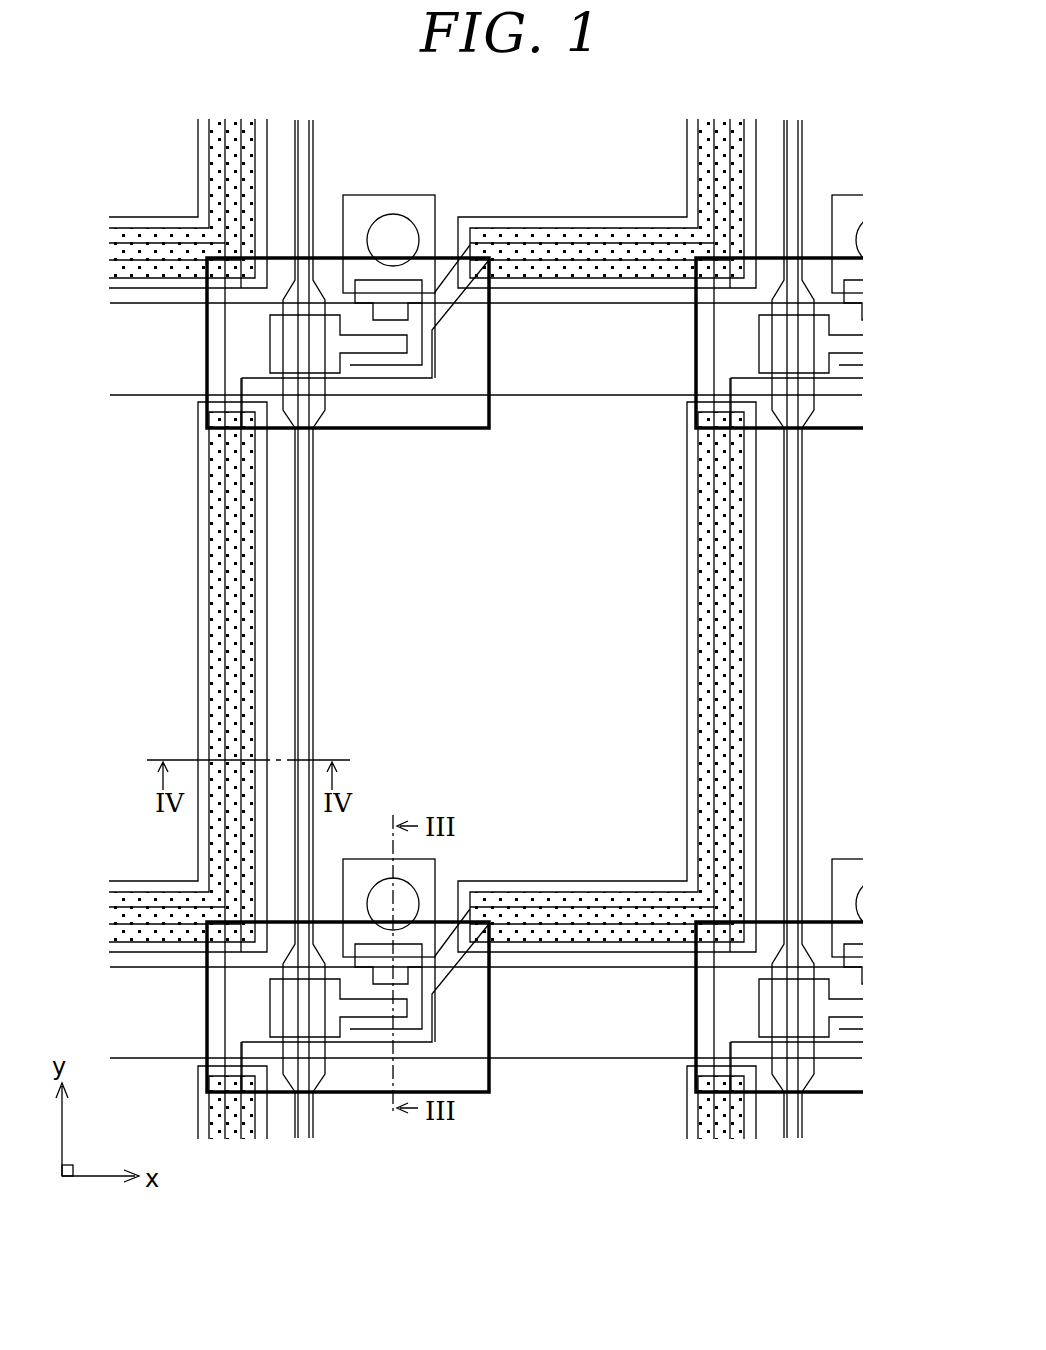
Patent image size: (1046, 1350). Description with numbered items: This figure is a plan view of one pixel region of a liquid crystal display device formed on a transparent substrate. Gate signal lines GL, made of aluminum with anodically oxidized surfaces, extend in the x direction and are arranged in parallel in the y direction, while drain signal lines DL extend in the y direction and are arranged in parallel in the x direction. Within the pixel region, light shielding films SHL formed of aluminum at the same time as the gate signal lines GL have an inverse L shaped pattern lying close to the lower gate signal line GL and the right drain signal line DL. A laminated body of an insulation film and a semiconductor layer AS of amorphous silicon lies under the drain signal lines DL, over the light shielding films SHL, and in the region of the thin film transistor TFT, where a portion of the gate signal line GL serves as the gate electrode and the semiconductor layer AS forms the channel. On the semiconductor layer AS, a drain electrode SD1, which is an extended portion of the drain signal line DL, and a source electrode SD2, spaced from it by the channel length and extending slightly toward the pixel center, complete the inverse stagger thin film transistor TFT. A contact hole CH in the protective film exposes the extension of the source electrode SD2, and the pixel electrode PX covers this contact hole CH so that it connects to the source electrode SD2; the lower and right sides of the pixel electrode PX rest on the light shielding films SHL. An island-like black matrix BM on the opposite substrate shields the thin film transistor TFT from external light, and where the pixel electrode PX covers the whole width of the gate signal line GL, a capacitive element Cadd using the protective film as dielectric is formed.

The gate signal line GL is at (98, 313).
The drain signal line DL is at (317, 1143).
The semiconductor layer AS is at (273, 487).
The light shielding film SHL is at (527, 286).
The pixel electrode PX is at (637, 257).
The black matrix BM is at (441, 247).
The contact hole CH is at (370, 903).
The thin film transistor TFT is at (590, 729).
The drain electrode SD1 is at (375, 1007).
The source electrode SD2 is at (400, 973).
The capacitive element Cadd is at (571, 322).